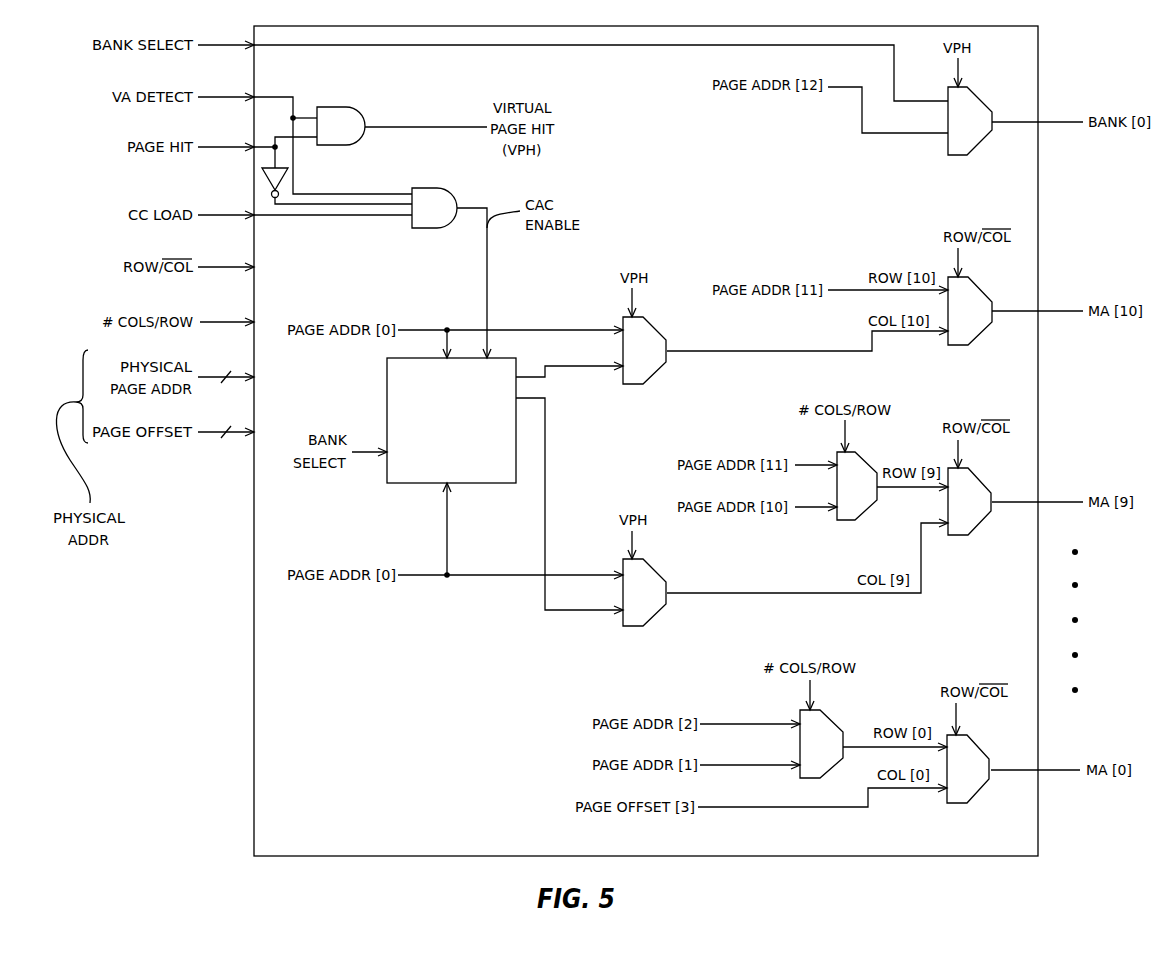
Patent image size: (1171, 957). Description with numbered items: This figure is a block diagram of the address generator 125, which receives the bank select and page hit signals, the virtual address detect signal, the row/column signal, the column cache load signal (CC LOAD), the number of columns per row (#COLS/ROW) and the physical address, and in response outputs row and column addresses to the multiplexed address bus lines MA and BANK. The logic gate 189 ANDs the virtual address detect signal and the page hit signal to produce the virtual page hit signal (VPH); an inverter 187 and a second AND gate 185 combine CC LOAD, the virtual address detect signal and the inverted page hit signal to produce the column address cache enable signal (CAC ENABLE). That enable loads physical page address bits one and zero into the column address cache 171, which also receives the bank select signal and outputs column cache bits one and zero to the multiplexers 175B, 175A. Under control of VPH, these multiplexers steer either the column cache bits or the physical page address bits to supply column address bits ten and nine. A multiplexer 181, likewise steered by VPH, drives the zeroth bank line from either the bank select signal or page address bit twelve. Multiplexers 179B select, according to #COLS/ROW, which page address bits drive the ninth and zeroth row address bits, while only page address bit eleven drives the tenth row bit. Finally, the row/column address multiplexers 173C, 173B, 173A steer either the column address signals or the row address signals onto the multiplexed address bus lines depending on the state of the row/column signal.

The address generator 125 is at (480, 844).
The logic gate 189 is at (340, 107).
The inverter 187 is at (258, 170).
The AND gate 185 is at (432, 228).
The column address cache 171 is at (512, 477).
The multiplexer 175B is at (640, 384).
The multiplexer 175A is at (640, 627).
The multiplexer 181 is at (960, 155).
The row/column address multiplexer 173C is at (960, 345).
The row/column address multiplexer 173B is at (960, 535).
The row/column address multiplexer 173A is at (975, 800).
The multiplexer 179B is at (842, 520).